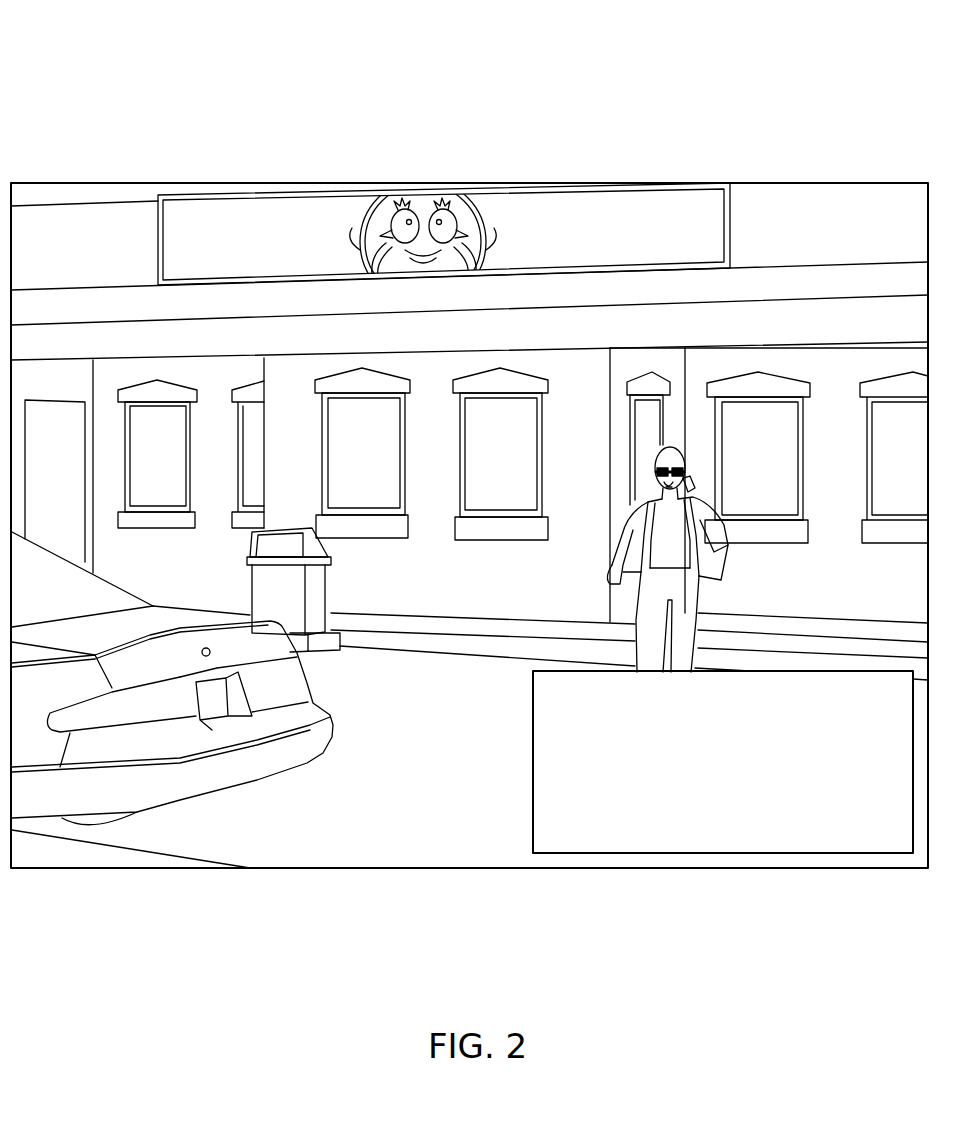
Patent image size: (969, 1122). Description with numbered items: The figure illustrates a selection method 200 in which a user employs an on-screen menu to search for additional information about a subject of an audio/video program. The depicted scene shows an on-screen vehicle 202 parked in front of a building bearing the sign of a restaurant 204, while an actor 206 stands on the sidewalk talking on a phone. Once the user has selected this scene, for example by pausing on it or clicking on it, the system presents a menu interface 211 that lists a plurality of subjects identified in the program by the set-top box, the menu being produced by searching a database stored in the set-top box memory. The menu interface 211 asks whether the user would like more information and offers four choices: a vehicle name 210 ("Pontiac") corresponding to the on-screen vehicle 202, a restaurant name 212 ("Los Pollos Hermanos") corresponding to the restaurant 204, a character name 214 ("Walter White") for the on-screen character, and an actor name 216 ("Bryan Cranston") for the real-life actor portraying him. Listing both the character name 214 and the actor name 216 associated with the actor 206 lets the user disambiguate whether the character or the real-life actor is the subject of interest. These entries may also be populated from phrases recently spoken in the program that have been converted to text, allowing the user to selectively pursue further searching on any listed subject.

The selection method 200 is at (185, 73).
The on-screen vehicle 202 is at (290, 678).
The restaurant 204 is at (712, 217).
The actor 206 is at (687, 468).
The menu interface 211 is at (688, 758).
The vehicle name 210 is at (565, 750).
The restaurant name 212 is at (565, 781).
The character name 214 is at (565, 802).
The actor name 216 is at (565, 833).